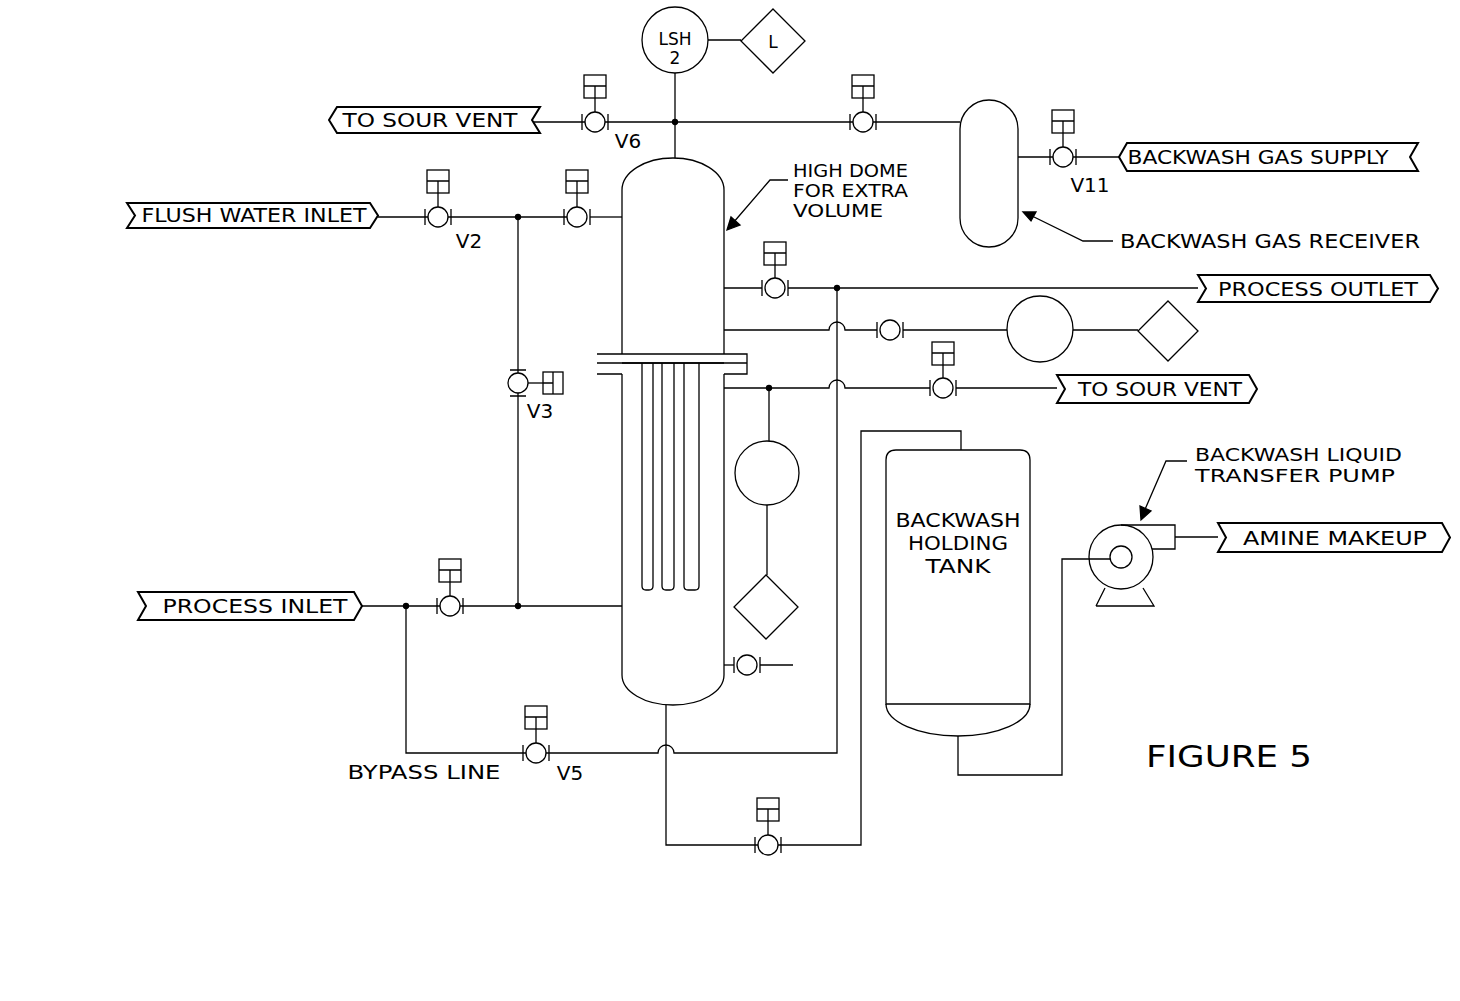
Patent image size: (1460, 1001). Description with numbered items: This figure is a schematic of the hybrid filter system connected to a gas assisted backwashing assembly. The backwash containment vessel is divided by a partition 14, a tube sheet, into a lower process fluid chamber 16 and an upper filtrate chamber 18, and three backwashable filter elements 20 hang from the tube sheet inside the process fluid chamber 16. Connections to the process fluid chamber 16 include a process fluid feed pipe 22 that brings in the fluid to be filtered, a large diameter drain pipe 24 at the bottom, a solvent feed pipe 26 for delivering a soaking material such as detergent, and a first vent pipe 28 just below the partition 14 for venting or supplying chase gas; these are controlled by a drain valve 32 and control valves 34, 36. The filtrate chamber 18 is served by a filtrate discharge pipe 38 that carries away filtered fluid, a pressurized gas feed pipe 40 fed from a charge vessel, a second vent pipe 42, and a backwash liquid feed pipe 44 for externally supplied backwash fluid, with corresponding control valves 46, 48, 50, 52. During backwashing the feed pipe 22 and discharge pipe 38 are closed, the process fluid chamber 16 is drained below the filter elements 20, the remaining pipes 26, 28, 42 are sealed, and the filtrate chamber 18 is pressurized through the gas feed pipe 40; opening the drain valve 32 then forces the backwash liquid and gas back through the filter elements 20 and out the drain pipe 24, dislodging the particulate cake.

The partition 14 is at (648, 363).
The process fluid chamber 16 is at (636, 677).
The filtrate chamber 18 is at (624, 307).
The filter elements 20 is at (645, 593).
The process fluid feed pipe 22 is at (565, 602).
The drain pipe 24 is at (664, 828).
The solvent feed pipe 26 is at (777, 667).
The first vent pipe 28 is at (746, 390).
The control valve 32 is at (778, 842).
The control valve 34 is at (745, 675).
The control valve 36 is at (935, 383).
The filtrate discharge pipe 38 is at (735, 286).
The pressurized gas feed pipe 40 is at (722, 118).
The second vent pipe 42 is at (732, 330).
The backwash liquid feed pipe 44 is at (607, 218).
The control valve 46 is at (787, 285).
The control valve 48 is at (875, 118).
The control valve 50 is at (887, 322).
The control valve 52 is at (570, 213).